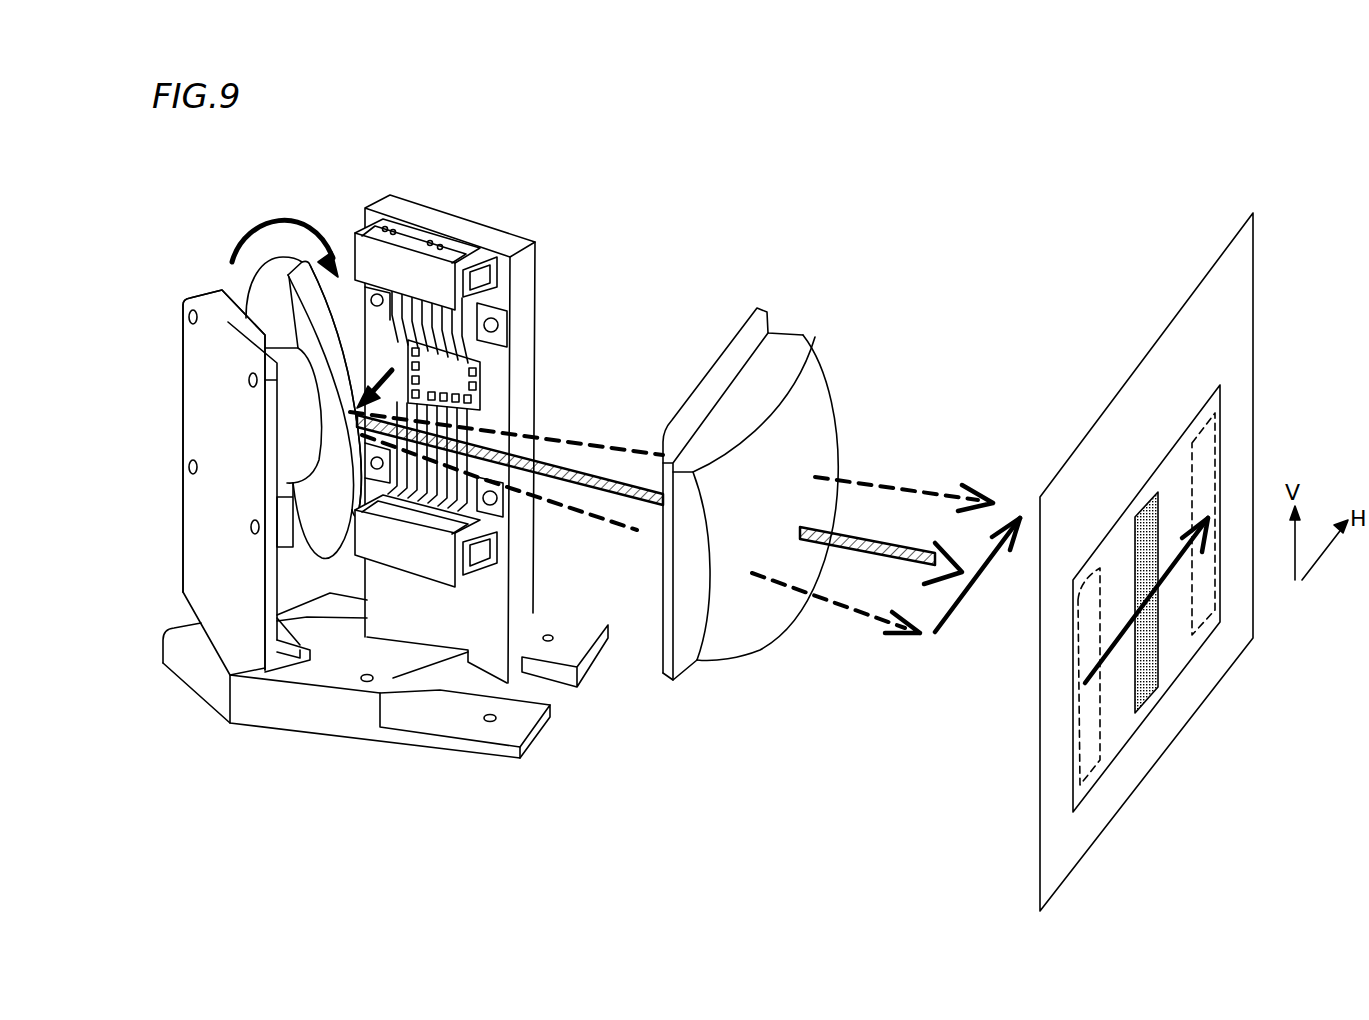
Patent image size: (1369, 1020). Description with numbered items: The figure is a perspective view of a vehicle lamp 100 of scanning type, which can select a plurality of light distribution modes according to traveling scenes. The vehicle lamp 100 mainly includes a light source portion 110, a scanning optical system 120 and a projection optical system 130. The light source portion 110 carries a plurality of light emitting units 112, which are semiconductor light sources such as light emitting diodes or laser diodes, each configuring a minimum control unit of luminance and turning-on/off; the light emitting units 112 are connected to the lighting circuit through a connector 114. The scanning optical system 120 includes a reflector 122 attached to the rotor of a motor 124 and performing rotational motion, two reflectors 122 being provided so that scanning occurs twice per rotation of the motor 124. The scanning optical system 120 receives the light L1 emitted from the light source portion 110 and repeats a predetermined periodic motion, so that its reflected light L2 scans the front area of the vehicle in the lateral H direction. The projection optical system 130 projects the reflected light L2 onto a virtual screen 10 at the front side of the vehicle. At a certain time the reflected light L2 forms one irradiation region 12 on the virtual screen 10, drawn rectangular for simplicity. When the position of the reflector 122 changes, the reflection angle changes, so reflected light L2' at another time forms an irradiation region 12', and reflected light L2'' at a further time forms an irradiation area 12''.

The vehicle lamp 100 is at (772, 104).
The virtual screen 10 is at (1203, 284).
The irradiation region 12 is at (1174, 647).
The irradiation region 12' is at (1235, 571).
The irradiation area 12'' is at (1124, 723).
The light source portion 110 is at (527, 224).
The light emitting units 112 is at (475, 397).
The connector 114 is at (368, 252).
The scanning optical system 120 is at (208, 284).
The reflector 122 is at (265, 302).
The motor 124 is at (290, 408).
The projection optical system 130 is at (803, 335).
The light L1 is at (380, 367).
The reflected light L2 is at (659, 499).
The reflected light L2' is at (671, 461).
The reflected light L2'' is at (641, 566).